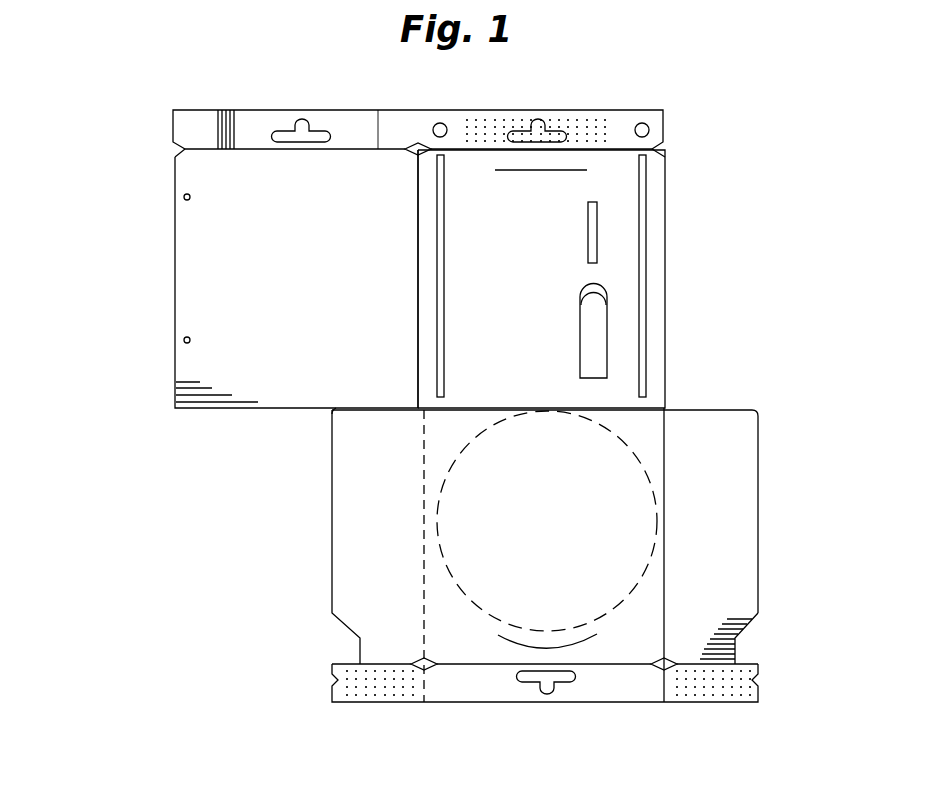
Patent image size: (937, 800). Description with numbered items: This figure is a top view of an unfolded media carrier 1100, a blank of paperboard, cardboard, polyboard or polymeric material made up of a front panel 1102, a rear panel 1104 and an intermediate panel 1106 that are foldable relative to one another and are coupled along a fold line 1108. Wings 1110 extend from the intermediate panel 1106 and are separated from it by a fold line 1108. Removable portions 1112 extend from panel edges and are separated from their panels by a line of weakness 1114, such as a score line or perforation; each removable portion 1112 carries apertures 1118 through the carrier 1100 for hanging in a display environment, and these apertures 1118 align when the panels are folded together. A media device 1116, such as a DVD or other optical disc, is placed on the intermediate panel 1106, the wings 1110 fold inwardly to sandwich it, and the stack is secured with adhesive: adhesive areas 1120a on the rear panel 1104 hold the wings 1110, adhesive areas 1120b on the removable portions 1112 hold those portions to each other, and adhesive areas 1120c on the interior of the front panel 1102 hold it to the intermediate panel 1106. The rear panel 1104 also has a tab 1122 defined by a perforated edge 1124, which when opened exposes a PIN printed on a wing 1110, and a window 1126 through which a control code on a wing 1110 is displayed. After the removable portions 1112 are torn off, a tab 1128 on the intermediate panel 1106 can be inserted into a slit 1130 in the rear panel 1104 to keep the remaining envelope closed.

The carrier 1100 is at (142, 694).
The front panel 1102 is at (190, 257).
The rear panel 1104 is at (628, 252).
The intermediate panel 1106 is at (645, 443).
The fold line 1108 is at (418, 307).
The wings 1110 is at (343, 448).
The removable portions 1112 is at (186, 123).
The line of weakness 1114 is at (378, 110).
The media device 1116 is at (467, 517).
The apertures 1118 is at (301, 124).
The adhesive areas 1120a is at (651, 126).
The adhesive areas 1120b is at (474, 121).
The adhesive areas 1120c is at (184, 196).
The tab 1122 is at (593, 362).
The perforated edge 1124 is at (605, 320).
The window 1126 is at (597, 226).
The tab 1128 is at (580, 643).
The slit 1130 is at (587, 170).